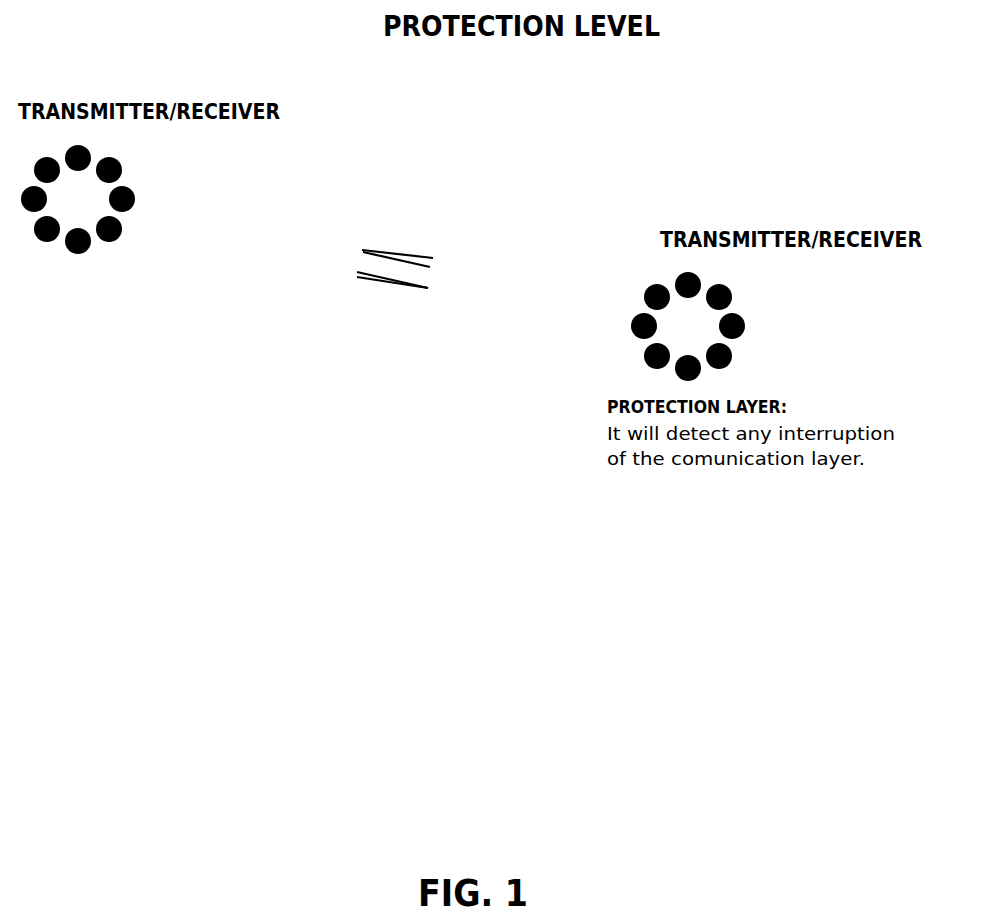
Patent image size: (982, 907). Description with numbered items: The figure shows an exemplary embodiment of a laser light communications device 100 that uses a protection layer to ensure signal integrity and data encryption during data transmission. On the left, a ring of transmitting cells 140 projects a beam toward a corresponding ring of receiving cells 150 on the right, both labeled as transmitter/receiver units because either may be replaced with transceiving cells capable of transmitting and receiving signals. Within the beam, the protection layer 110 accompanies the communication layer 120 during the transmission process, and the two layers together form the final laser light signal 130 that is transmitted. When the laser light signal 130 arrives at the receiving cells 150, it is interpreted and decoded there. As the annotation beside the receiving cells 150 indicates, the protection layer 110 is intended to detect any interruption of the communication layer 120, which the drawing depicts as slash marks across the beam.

The laser light communications device 100 is at (232, 443).
The protection layer 110 is at (377, 325).
The communication layer 120 is at (265, 255).
The laser light signal 130 is at (418, 200).
The transmitting cells 140 is at (42, 228).
The receiving cells 150 is at (735, 328).